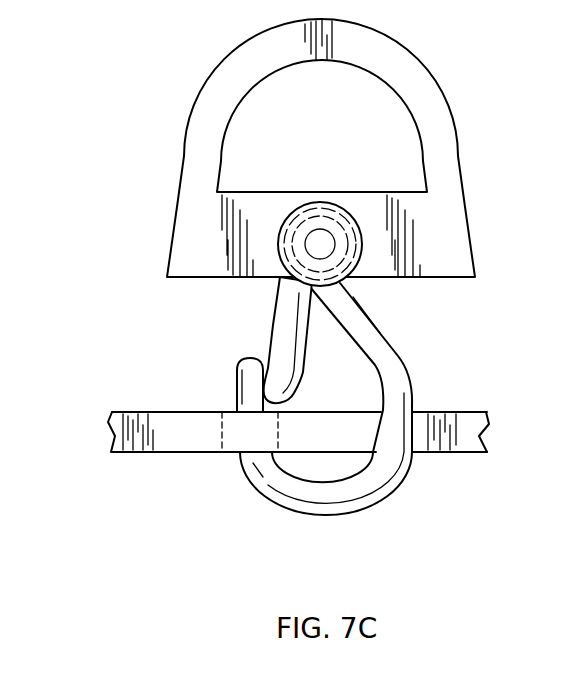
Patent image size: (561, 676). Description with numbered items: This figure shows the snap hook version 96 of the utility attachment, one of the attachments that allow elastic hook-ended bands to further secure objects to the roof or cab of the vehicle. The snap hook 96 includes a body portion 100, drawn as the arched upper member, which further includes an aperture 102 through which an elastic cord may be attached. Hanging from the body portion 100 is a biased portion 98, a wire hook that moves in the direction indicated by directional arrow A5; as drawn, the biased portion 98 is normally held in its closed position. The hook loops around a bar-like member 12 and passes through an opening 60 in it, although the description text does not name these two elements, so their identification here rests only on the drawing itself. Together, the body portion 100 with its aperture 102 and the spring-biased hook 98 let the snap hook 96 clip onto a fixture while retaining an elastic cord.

The frame member / bar 12 is at (290, 436).
The aperture in bar 60 is at (222, 433).
The snap hook 96 is at (376, 358).
The biased portion 98 is at (287, 360).
The body portion 100 is at (364, 148).
The aperture 102 is at (392, 101).
The directional arrow A5 is at (253, 340).